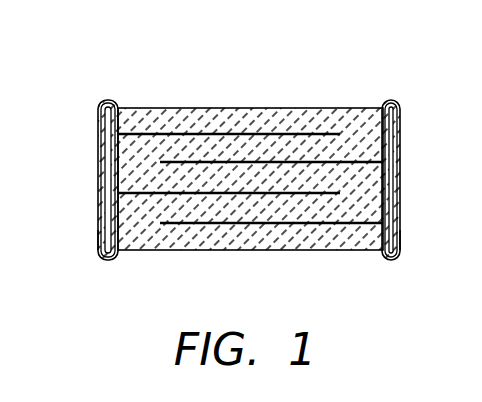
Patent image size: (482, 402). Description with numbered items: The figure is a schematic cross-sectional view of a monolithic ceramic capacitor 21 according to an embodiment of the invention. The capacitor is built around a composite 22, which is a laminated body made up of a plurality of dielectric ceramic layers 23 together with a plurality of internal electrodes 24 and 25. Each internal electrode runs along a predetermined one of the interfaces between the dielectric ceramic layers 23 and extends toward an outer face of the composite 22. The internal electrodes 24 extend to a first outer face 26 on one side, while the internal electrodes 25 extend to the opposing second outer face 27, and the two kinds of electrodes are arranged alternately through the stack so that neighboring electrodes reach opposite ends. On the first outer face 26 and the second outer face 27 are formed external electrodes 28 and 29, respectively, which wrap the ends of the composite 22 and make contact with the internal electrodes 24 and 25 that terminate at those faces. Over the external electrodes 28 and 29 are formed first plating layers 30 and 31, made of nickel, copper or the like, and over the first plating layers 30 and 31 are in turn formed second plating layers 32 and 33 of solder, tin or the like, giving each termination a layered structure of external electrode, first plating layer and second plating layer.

The monolithic ceramic capacitor 21 is at (139, 28).
The composite 22 is at (220, 252).
The dielectric ceramic layers 23 is at (238, 176).
The internal electrodes 24 is at (150, 134).
The internal electrodes 25 is at (318, 163).
The first outer face 26 is at (104, 172).
The second outer face 27 is at (400, 171).
The external electrode 28 is at (100, 139).
The external electrode 29 is at (400, 125).
The first plating layer 30 is at (108, 202).
The first plating layer 31 is at (400, 195).
The second plating layer 32 is at (100, 238).
The second plating layer 33 is at (400, 230).